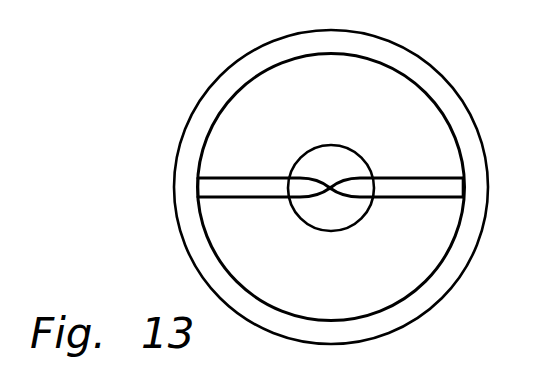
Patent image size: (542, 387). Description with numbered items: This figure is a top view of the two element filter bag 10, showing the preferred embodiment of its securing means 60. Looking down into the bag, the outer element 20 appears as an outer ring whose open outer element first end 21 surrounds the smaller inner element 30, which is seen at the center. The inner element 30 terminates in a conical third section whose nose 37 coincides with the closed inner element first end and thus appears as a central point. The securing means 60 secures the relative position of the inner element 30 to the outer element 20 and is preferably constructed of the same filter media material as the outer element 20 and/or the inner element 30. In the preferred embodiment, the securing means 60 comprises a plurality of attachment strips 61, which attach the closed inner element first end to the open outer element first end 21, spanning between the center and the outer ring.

The filter bag 10 is at (140, 240).
The outer element 20 is at (432, 63).
The outer element first end 21 is at (232, 63).
The inner element 30 is at (303, 223).
The nose 37 is at (330, 185).
The securing means 60 is at (158, 122).
The attachment strips 61 is at (242, 175).